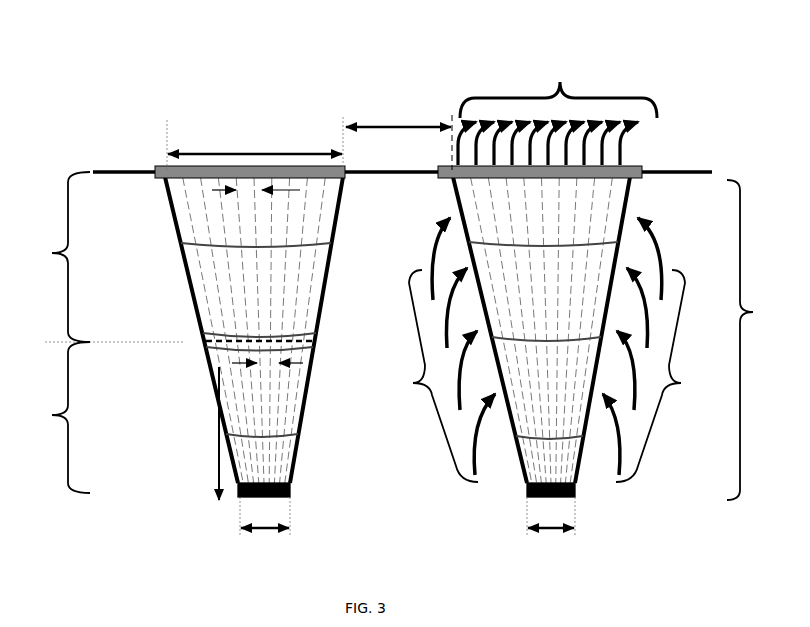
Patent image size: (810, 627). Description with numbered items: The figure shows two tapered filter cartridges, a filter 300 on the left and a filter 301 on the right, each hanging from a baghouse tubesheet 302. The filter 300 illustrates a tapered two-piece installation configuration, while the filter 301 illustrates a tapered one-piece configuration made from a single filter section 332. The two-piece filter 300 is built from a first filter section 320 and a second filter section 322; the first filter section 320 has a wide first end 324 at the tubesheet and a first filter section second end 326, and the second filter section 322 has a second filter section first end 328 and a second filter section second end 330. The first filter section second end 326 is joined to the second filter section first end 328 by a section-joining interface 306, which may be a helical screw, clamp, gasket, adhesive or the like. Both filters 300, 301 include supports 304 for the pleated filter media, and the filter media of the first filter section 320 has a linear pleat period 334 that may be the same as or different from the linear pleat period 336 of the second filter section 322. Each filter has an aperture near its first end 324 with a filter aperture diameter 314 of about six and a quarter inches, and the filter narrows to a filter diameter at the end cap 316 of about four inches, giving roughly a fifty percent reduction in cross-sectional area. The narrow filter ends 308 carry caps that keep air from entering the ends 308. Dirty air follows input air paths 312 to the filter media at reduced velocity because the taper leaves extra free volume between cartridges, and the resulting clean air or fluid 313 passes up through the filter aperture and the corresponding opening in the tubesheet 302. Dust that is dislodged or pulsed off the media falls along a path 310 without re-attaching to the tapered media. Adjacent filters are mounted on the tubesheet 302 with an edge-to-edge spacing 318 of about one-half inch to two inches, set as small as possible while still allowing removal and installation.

The filter 300 is at (265, 56).
The filter 301 is at (532, 54).
The baghouse tubesheet 302 is at (133, 168).
The supports 304 is at (182, 245).
The section-joining interface 306 is at (213, 341).
The filter ends 308 is at (546, 497).
The path 310 is at (216, 476).
The input air paths 312 is at (412, 383).
The clean air or fluid 313 is at (564, 90).
The filter aperture diameter 314 is at (247, 148).
The filter diameter at the end cap 316 is at (250, 531).
The edge-to-edge spacing 318 is at (410, 133).
The first filter section 320 is at (50, 254).
The second filter section 322 is at (50, 416).
The first end 324 is at (466, 176).
The first filter section second end 326 is at (325, 333).
The second filter section first end 328 is at (325, 360).
The second filter section second end 330 is at (304, 492).
The single filter section 332 is at (755, 312).
The linear pleat period 334 is at (278, 193).
The linear pleat period 336 is at (292, 367).